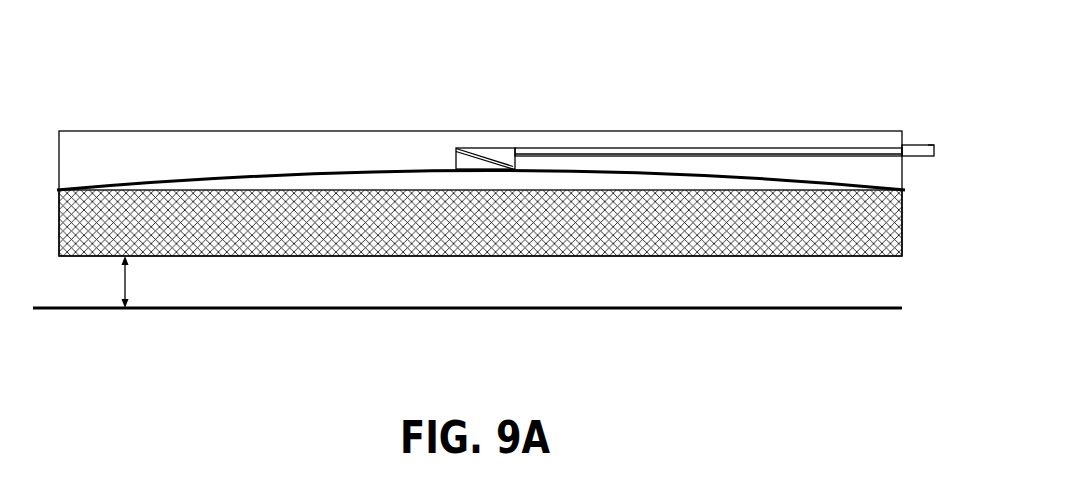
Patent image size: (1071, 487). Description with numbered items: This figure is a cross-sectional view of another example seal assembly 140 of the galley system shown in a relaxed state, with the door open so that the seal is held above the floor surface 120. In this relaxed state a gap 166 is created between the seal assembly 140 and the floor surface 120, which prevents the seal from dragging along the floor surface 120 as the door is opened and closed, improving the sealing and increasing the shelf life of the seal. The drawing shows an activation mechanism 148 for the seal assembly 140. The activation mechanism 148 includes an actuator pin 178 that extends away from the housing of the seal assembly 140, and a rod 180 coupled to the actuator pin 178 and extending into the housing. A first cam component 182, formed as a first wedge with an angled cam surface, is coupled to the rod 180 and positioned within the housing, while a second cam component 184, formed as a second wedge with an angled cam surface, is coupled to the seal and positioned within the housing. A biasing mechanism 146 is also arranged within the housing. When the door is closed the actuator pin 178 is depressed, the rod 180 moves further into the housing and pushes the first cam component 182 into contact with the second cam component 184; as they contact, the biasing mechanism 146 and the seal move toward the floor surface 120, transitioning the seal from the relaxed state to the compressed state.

The seal assembly 140 is at (86, 82).
The biasing mechanism 146 is at (275, 177).
The second cam component 184 is at (457, 160).
The first cam component 182 is at (492, 148).
The rod 180 is at (639, 148).
The actuator pin 178 is at (914, 143).
The activation mechanism 148 is at (932, 143).
The gap 166 is at (125, 285).
The floor surface 120 is at (283, 310).